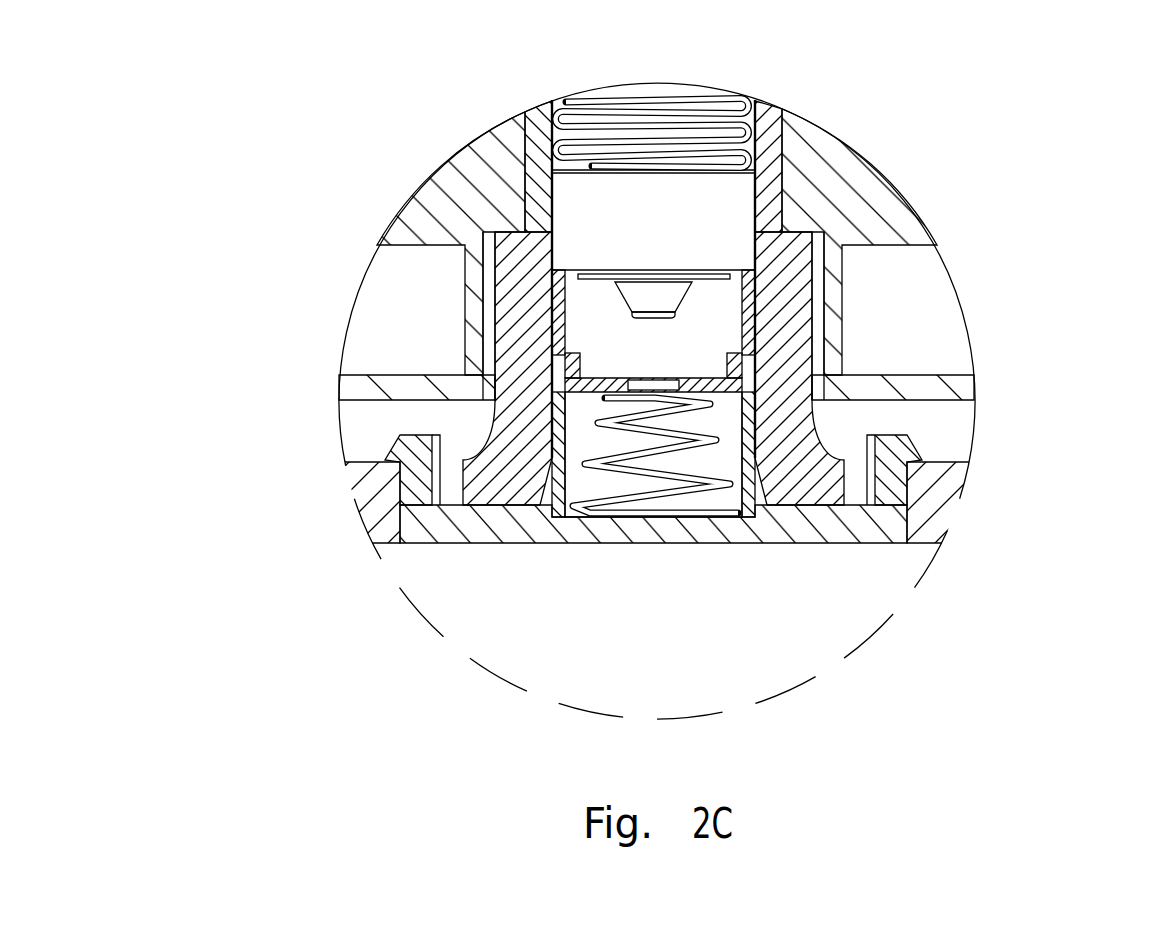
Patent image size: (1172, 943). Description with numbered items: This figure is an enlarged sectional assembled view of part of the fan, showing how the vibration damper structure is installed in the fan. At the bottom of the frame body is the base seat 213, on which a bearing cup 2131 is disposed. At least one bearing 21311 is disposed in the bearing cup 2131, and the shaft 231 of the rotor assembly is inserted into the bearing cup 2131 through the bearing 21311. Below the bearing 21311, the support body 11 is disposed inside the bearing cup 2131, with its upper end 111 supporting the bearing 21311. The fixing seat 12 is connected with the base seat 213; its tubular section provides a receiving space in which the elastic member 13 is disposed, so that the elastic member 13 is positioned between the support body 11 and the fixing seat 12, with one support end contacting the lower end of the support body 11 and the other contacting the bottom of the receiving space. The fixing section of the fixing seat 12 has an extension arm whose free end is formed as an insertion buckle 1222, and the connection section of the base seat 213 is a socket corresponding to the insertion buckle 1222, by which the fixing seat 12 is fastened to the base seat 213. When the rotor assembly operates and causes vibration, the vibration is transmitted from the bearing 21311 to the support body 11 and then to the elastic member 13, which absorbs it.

The support body 11 is at (553, 318).
The upper end 111 is at (752, 272).
The fixing seat 12 is at (668, 532).
The insertion buckle 1222 is at (896, 454).
The elastic member 13 is at (600, 460).
The base seat 213 is at (927, 503).
The bearing cup 2131 is at (760, 193).
The bearing 21311 is at (573, 213).
The shaft 231 is at (653, 128).